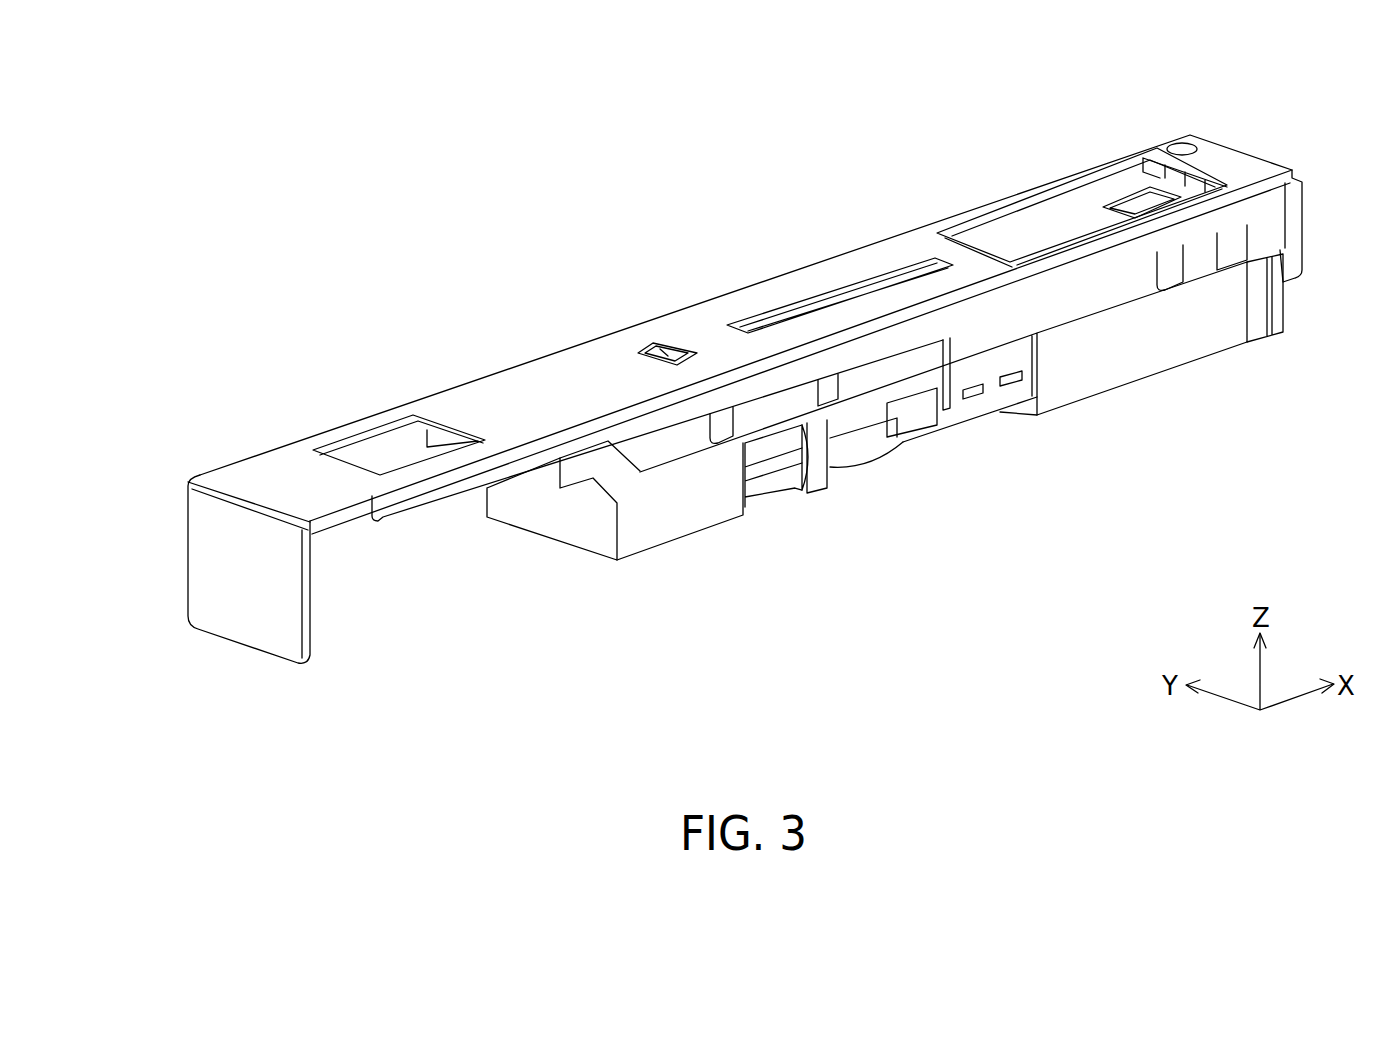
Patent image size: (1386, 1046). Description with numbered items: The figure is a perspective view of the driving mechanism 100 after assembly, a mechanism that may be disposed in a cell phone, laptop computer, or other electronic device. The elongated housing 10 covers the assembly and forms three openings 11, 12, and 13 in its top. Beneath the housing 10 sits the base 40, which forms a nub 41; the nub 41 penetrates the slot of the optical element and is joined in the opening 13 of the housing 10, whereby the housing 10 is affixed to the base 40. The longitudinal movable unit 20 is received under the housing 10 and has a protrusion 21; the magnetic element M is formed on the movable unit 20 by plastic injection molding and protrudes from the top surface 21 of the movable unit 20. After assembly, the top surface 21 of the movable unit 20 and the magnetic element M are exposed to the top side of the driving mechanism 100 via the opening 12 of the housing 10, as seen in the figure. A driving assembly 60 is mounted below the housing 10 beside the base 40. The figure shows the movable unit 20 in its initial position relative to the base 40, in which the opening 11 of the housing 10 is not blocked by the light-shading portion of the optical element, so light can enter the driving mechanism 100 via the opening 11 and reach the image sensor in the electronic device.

The driving mechanism 100 is at (195, 74).
The housing 10 is at (226, 449).
The opening 11 is at (367, 443).
The opening 12 is at (990, 222).
The opening 13 is at (668, 355).
The movable unit 20 is at (1097, 207).
The protrusion (top surface) 21 is at (1043, 227).
The base 40 is at (550, 553).
The nub 41 is at (667, 348).
The driving assembly 60 is at (776, 504).
The magnetic element M is at (1148, 190).